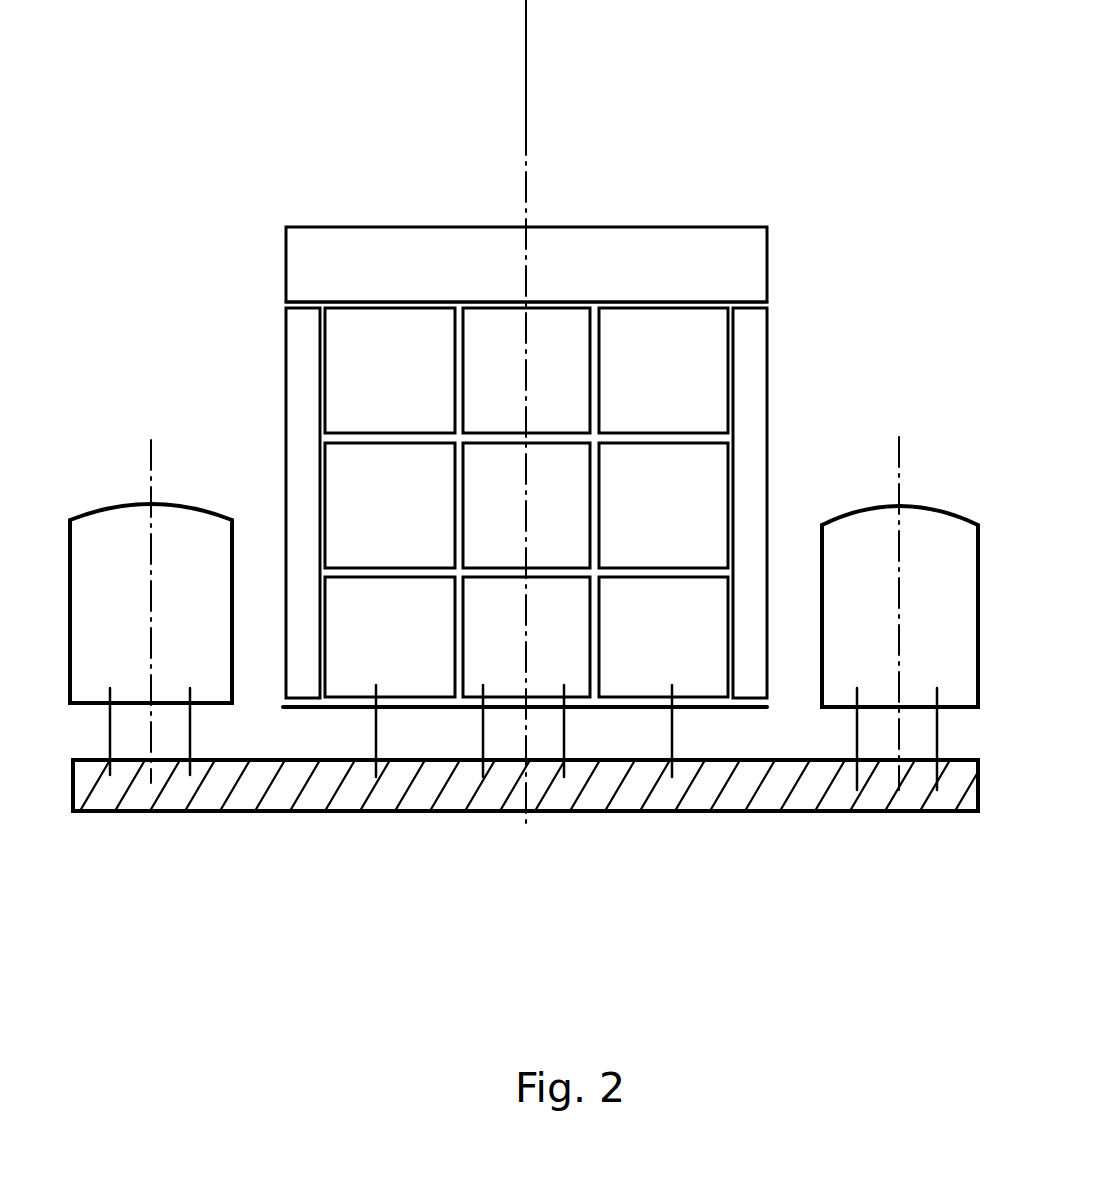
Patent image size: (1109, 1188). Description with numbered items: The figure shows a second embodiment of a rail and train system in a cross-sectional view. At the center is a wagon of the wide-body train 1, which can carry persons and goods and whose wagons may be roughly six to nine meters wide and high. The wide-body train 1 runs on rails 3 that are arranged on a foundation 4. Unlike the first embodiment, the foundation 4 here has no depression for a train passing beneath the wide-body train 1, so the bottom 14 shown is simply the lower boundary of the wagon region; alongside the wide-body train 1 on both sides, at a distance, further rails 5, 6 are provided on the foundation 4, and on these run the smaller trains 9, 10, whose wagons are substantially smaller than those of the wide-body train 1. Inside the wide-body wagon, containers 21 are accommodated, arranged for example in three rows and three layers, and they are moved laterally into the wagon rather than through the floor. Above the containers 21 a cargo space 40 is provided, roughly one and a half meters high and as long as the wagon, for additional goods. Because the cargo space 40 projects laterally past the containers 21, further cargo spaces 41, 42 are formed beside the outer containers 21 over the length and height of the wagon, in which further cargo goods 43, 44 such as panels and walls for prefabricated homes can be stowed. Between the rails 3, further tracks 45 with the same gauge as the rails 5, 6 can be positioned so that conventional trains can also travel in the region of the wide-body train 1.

The wide-body train 1 is at (683, 212).
The rails 3 is at (378, 744).
The foundation 4 is at (788, 790).
The further rails 5 is at (192, 750).
The further rails 6 is at (938, 748).
The train 9 is at (170, 495).
The train 10 is at (933, 500).
The bottom 14 is at (343, 713).
The containers 21 is at (358, 615).
The cargo space 40 is at (548, 253).
The further cargo space 41 is at (297, 302).
The further cargo space 42 is at (750, 708).
The cargo goods 43 is at (300, 605).
The cargo goods 44 is at (750, 630).
The further tracks 45 is at (565, 742).